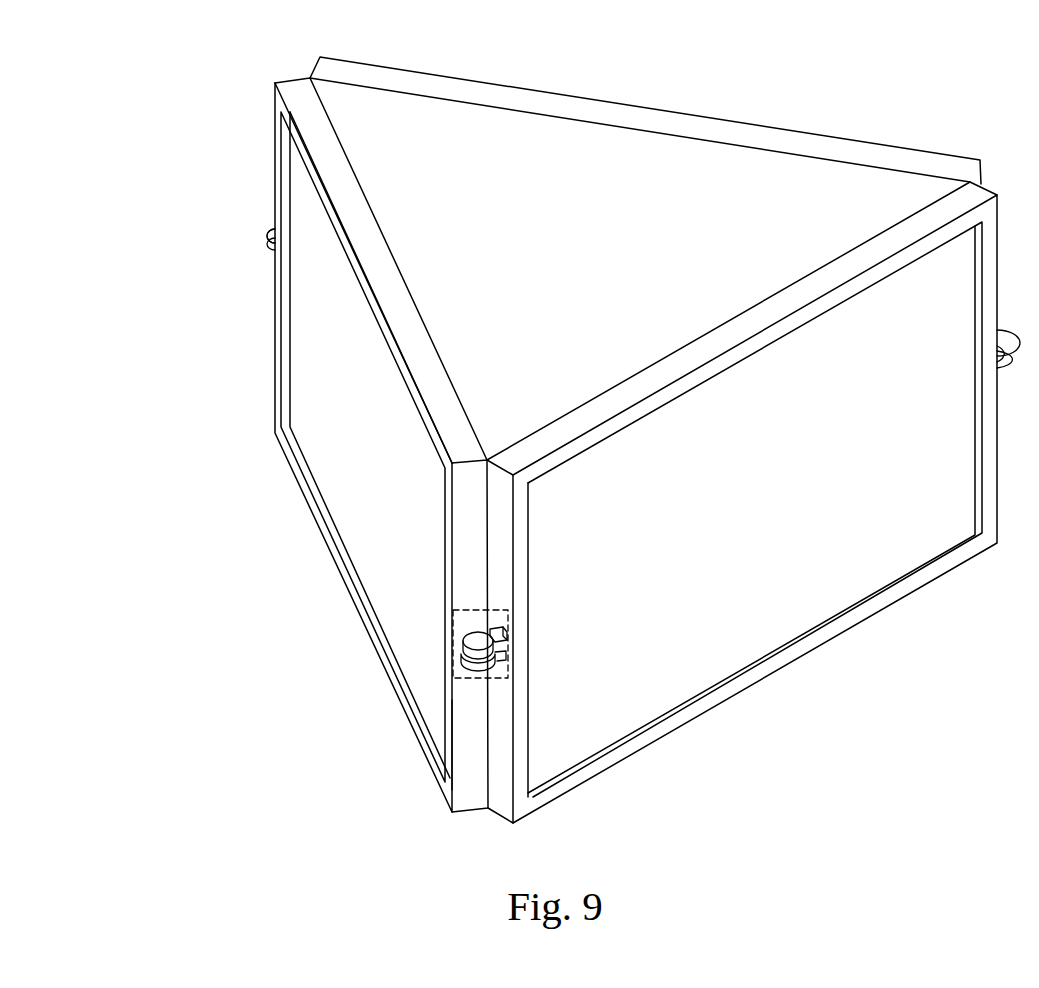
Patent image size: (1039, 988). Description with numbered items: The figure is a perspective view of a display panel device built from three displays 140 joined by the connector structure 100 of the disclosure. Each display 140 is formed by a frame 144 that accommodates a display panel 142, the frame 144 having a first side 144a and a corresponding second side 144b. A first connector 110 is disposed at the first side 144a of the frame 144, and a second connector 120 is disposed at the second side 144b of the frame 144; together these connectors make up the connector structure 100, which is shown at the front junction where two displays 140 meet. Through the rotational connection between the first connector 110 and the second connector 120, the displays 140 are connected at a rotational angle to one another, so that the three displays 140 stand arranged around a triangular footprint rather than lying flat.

The connector structure 100 is at (467, 655).
The first connector 110 is at (468, 664).
The second connector 120 is at (478, 642).
The display 140 is at (674, 78).
The display panel 142 is at (370, 516).
The frame 144 is at (353, 208).
The first side 144a is at (455, 732).
The second side 144b is at (266, 268).